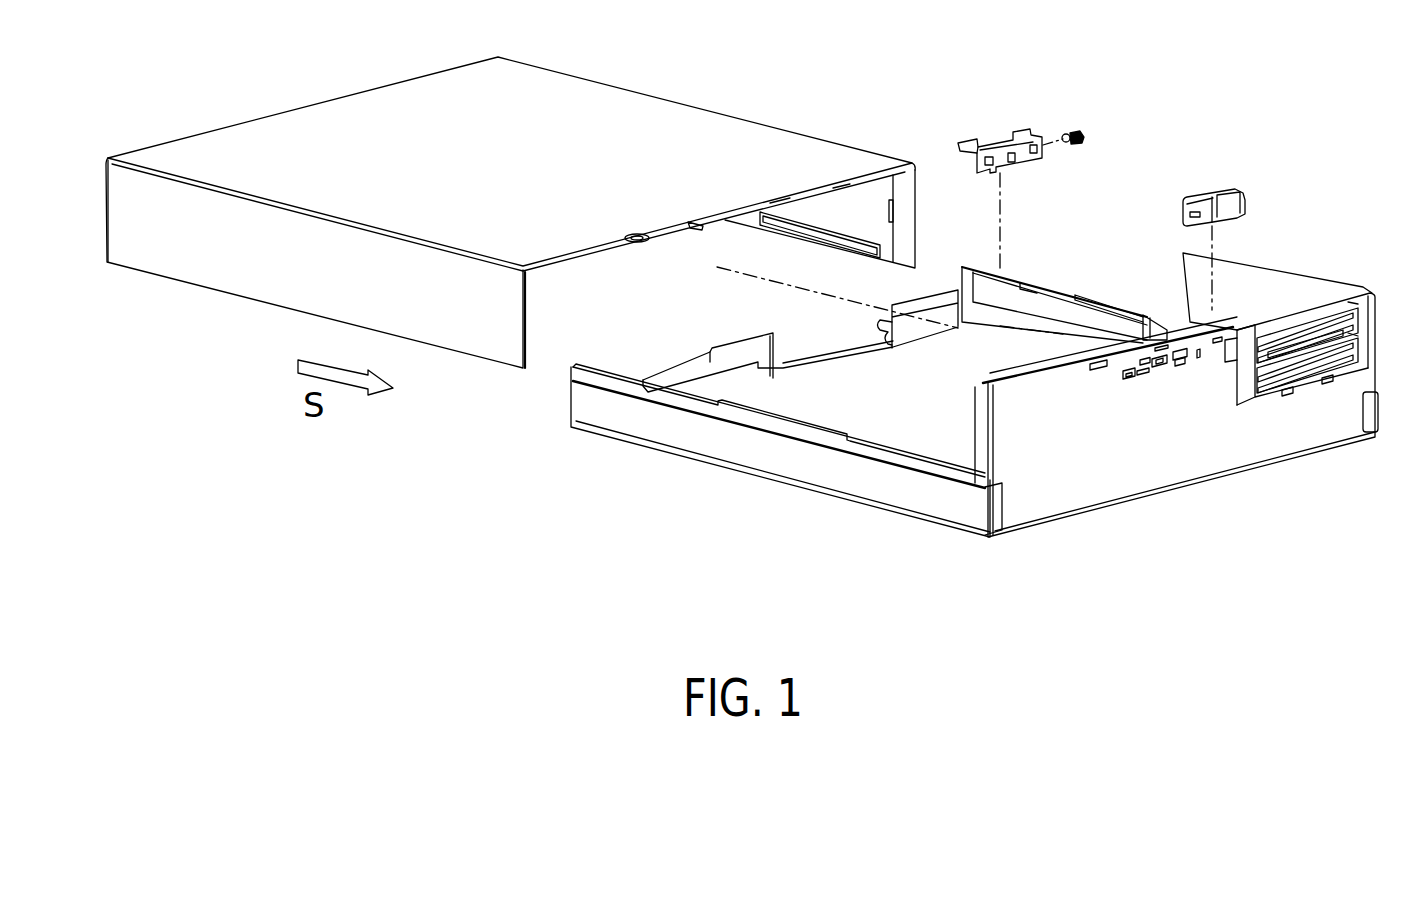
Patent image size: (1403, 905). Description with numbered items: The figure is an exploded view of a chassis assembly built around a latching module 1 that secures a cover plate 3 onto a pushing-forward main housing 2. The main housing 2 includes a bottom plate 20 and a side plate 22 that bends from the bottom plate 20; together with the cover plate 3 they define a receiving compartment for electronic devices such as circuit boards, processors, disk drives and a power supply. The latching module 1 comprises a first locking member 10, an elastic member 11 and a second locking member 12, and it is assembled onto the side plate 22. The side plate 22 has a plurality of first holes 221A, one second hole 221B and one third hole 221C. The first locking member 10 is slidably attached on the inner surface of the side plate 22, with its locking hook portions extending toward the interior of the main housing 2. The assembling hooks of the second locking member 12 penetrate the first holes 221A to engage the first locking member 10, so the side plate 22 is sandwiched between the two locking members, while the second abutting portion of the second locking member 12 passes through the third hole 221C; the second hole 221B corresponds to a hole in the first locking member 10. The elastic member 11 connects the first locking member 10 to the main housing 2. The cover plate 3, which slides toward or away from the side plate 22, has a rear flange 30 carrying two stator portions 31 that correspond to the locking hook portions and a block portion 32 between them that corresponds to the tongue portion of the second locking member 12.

The latching module 1 is at (1106, 167).
The main housing 2 is at (974, 445).
The cover plate 3 is at (712, 113).
The first locking member 10 is at (1030, 130).
The elastic member 11 is at (1082, 132).
The second locking member 12 is at (1219, 204).
The bottom plate 20 is at (932, 500).
The side plate 22 is at (1113, 453).
The rear flange 30 is at (862, 178).
The stator portion 31 is at (723, 220).
The block portion 32 is at (702, 216).
The first hole 221A is at (1187, 358).
The second hole 221B is at (1147, 328).
The third hole 221C is at (1130, 378).